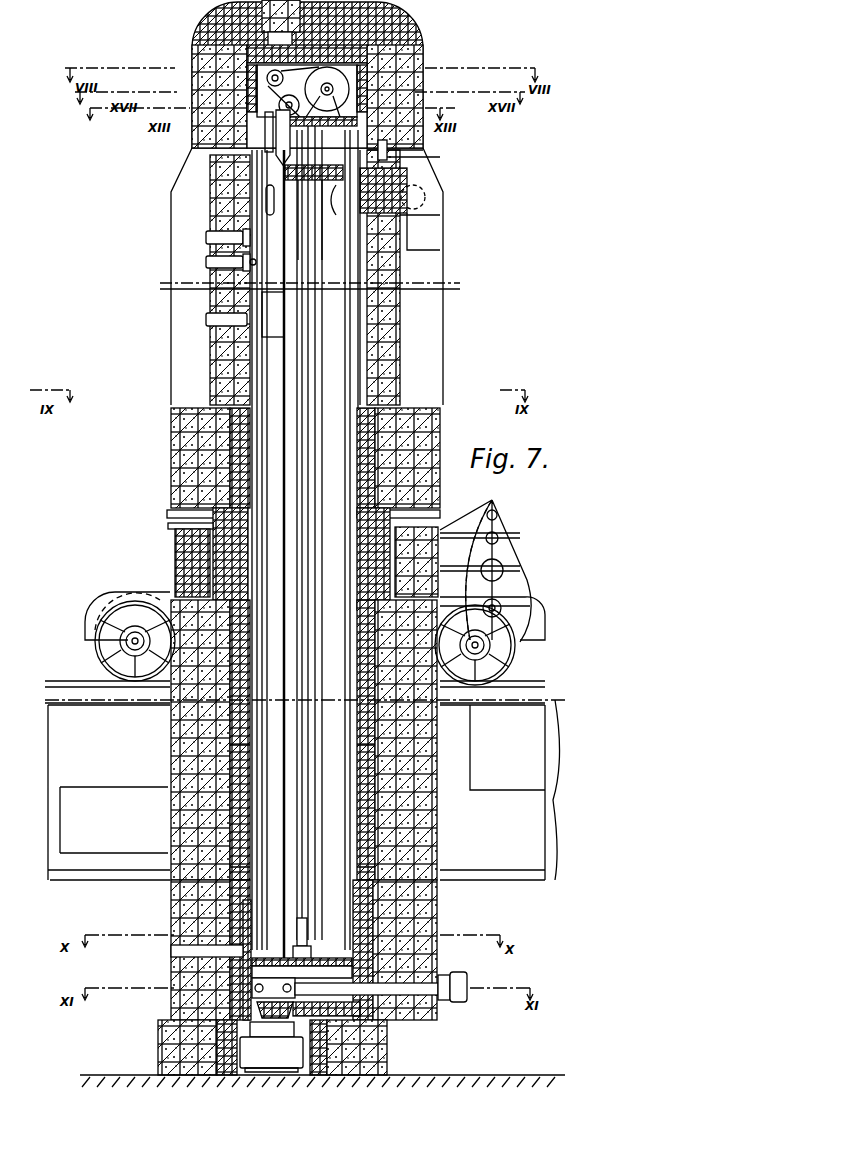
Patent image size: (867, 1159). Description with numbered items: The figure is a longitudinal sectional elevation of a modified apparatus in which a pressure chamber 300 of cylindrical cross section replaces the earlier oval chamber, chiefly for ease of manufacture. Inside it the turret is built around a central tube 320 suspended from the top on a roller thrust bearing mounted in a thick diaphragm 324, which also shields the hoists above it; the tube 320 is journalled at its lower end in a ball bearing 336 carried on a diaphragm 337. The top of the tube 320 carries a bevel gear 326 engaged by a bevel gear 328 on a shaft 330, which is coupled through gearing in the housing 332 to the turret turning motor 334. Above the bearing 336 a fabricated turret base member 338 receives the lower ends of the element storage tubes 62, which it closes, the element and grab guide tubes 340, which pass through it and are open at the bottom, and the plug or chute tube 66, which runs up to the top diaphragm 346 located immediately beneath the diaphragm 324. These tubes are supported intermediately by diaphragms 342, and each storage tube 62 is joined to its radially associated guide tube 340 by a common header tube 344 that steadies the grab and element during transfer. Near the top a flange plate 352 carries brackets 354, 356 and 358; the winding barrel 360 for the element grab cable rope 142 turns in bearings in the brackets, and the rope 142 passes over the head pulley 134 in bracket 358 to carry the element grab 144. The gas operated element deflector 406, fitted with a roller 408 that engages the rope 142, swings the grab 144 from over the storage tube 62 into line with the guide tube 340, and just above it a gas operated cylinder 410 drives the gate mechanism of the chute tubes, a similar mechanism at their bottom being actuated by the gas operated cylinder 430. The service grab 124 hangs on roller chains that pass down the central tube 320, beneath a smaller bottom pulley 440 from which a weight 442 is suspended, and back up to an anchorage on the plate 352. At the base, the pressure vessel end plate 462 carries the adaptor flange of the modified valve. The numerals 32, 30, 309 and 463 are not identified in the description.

The head pulley 134 is at (262, 70).
The head dome 32 is at (402, 30).
The head plate 30 is at (386, 56).
The winding barrel 360 is at (335, 80).
The bracket 354 is at (296, 105).
The bracket 358 is at (222, 92).
The bracket 356 is at (300, 110).
The flange plate 352 is at (366, 120).
The gear housing plate 309 is at (320, 131).
The service grab 124 is at (272, 160).
The element grab cable rope 142 is at (262, 180).
The element storage tube 62 is at (232, 400).
The pressure chamber 300 is at (372, 150).
The thick diaphragm 324 is at (408, 176).
The housing 332 is at (425, 165).
The shaft 330 is at (393, 152).
The turret turning motor 334 is at (427, 197).
The element grab 144 is at (285, 200).
The top diaphragm 346 is at (337, 200).
The bevel gear 326 is at (298, 215).
The bevel gear 328 is at (337, 220).
The gas operated cylinder 410 is at (206, 237).
The roller 408 is at (206, 262).
The gas operated element deflector 406 is at (243, 265).
The header tube 344 is at (206, 318).
The element and grab guide tube 340 is at (262, 380).
The diaphragm 342 is at (284, 340).
The central tube 320 is at (310, 320).
The plug or chute tube 66 is at (345, 400).
The gas operated cylinder 430 is at (175, 953).
The bottom pulley 440 is at (300, 918).
The weight 442 is at (305, 935).
The diaphragm 337 is at (318, 955).
The turret base member 338 is at (359, 987).
The ball bearing 336 is at (390, 1044).
The pressure vessel end plate 462 is at (300, 1015).
The foot box 463 is at (271, 1054).